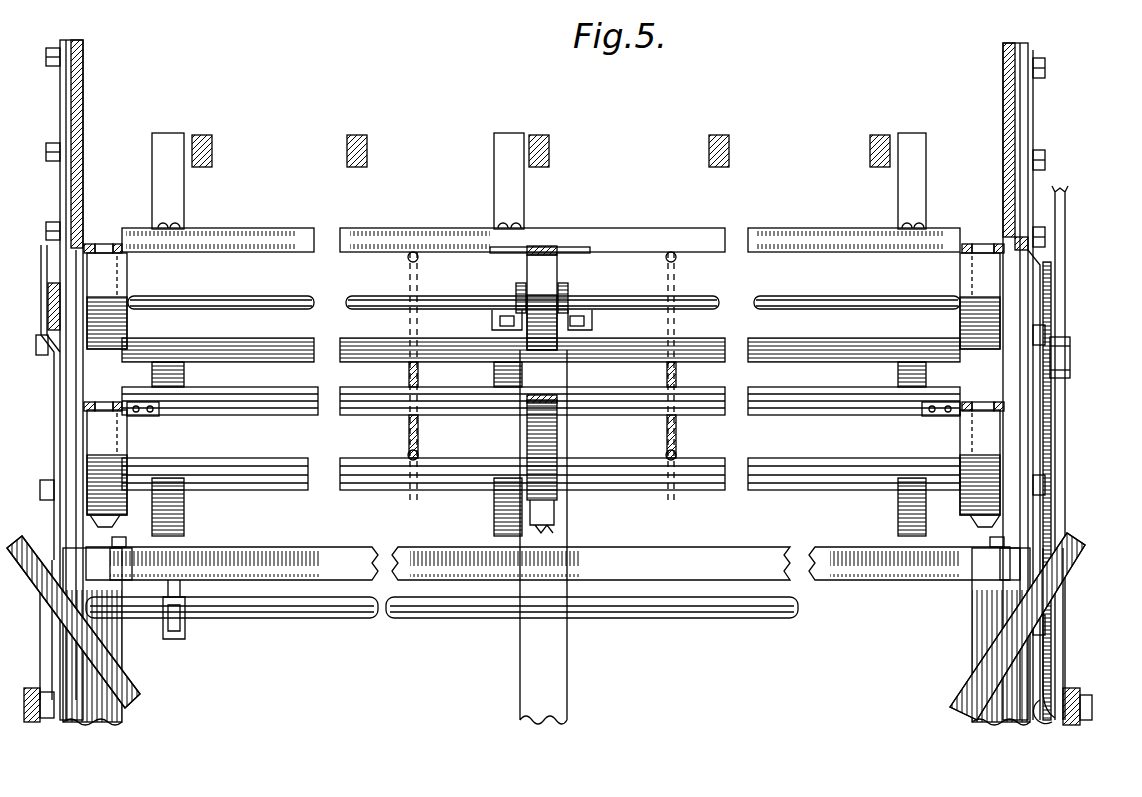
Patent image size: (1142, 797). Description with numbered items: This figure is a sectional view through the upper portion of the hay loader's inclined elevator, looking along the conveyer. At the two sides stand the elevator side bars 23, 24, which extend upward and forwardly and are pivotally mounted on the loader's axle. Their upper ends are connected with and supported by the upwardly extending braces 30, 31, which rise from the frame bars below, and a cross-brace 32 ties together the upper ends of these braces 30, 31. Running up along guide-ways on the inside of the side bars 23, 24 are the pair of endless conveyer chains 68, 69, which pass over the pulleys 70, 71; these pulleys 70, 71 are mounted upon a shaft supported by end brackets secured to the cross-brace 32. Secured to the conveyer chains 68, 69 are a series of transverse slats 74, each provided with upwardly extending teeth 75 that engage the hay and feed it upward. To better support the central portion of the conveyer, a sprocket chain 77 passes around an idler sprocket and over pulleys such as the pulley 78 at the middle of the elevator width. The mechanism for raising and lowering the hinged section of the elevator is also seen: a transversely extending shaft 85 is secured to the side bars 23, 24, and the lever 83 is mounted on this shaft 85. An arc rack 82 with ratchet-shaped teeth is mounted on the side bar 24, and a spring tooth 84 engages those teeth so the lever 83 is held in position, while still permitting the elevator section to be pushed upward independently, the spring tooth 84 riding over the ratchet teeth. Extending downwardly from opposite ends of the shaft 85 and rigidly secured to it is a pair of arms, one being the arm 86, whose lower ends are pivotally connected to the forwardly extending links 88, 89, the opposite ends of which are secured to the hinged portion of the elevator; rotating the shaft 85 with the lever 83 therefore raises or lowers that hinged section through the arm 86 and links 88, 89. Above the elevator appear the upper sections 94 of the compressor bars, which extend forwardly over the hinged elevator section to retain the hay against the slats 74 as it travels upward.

The side bar 23 is at (82, 120).
The side bar 24 is at (1003, 100).
The brace 30 is at (136, 700).
The brace 31 is at (962, 696).
The cross-brace 32 is at (312, 552).
The endless conveyer chain 68 is at (981, 244).
The endless conveyer chain 69 is at (104, 238).
The pulley 70 is at (996, 278).
The pulley 71 is at (128, 292).
The transverse slat 74 is at (818, 244).
The tooth 75 is at (503, 165).
The sprocket chain 77 is at (540, 246).
The pulley 78 is at (560, 290).
The arc rack 82 is at (1052, 440).
The lever 83 is at (1066, 198).
The spring tooth 84 is at (1071, 355).
The shaft 85 is at (308, 618).
The arm 86 is at (1064, 682).
The link 88 is at (1085, 706).
The link 89 is at (54, 702).
The upper section of compressor bar 94 is at (346, 153).